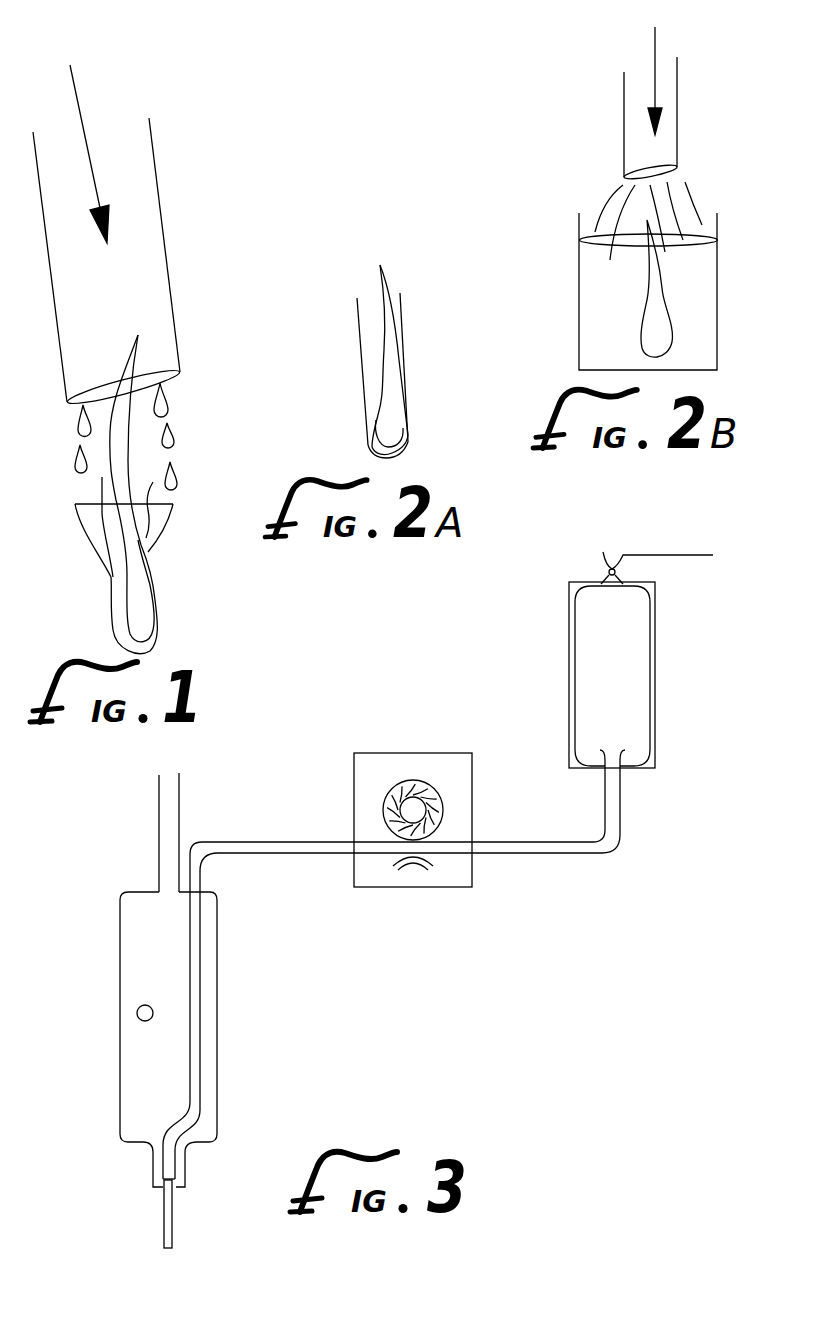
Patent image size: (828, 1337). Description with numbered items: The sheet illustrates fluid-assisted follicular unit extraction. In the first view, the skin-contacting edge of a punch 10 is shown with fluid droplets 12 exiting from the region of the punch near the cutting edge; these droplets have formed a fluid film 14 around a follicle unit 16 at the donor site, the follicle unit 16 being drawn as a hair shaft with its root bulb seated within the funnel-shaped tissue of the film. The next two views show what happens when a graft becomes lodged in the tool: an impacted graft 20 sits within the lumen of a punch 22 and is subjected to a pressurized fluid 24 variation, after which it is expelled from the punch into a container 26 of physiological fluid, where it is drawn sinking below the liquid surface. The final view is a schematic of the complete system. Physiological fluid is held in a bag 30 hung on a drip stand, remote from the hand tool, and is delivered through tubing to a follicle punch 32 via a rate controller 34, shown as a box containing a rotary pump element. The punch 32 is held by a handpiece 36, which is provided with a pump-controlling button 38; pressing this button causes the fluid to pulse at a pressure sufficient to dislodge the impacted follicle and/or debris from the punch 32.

In FIG. 1, the punch 10 is at (162, 212).
In FIG. 1, the fluid droplets 12 is at (162, 407).
In FIG. 1, the fluid film 14 is at (152, 520).
In FIG. 1, the follicle unit 16 is at (142, 620).
In FIG. 2A, the impacted graft 20 is at (393, 427).
In FIG. 2A, the punch 22 is at (403, 333).
In FIG. 2A, the pressurized fluid 24 is at (373, 327).
In FIG. 2B, the container 26 is at (579, 275).
In FIG. 3, the bag 30 is at (625, 668).
In FIG. 3, the follicle punch 32 is at (164, 1222).
In FIG. 3, the rate controller 34 is at (438, 767).
In FIG. 3, the handpiece 36 is at (168, 980).
In FIG. 3, the pump-controlling button 38 is at (137, 1013).